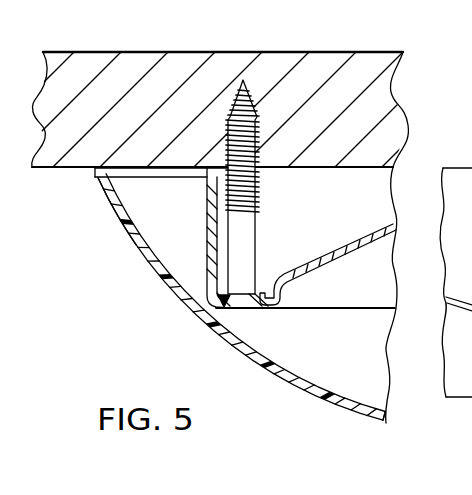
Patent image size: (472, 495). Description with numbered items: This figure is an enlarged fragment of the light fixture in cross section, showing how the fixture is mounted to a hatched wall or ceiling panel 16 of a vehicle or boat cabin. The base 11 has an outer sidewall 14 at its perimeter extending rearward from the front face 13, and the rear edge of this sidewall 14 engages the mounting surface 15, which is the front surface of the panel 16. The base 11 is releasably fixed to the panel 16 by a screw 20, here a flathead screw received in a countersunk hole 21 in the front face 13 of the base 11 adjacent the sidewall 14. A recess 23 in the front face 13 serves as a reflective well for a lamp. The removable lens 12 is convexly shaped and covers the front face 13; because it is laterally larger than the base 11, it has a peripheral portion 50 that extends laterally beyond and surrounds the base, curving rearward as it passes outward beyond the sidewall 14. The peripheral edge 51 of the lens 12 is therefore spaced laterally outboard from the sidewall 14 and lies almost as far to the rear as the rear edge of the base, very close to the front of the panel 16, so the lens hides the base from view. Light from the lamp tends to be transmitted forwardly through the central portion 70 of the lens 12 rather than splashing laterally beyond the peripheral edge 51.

The base 11 is at (401, 308).
The lens 12 is at (306, 400).
The front face 13 is at (298, 310).
The outer sidewall 14 is at (206, 207).
The mounting surface 15 is at (72, 170).
The panel 16 is at (378, 103).
The screw 20 is at (259, 182).
The countersunk hole 21 is at (230, 330).
The recess 23 is at (326, 260).
The peripheral portion 50 is at (140, 242).
The peripheral edge 51 is at (105, 172).
The central portion 70 is at (373, 423).